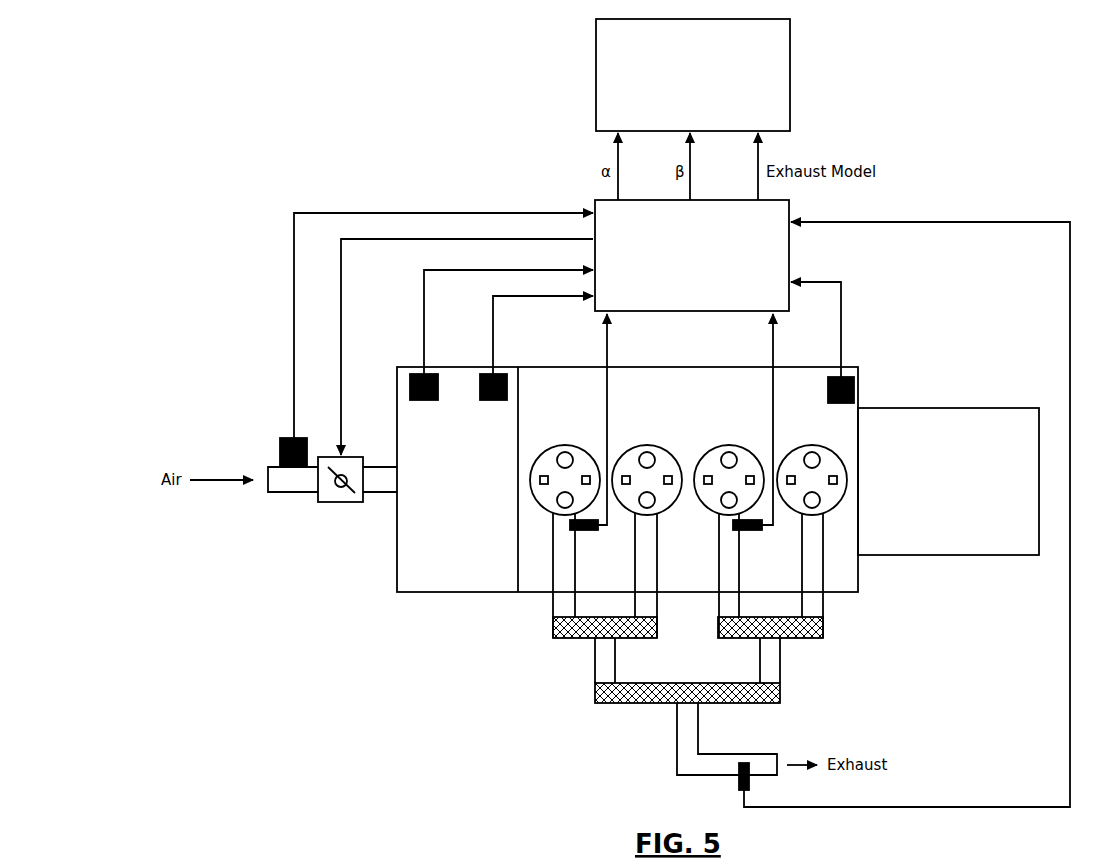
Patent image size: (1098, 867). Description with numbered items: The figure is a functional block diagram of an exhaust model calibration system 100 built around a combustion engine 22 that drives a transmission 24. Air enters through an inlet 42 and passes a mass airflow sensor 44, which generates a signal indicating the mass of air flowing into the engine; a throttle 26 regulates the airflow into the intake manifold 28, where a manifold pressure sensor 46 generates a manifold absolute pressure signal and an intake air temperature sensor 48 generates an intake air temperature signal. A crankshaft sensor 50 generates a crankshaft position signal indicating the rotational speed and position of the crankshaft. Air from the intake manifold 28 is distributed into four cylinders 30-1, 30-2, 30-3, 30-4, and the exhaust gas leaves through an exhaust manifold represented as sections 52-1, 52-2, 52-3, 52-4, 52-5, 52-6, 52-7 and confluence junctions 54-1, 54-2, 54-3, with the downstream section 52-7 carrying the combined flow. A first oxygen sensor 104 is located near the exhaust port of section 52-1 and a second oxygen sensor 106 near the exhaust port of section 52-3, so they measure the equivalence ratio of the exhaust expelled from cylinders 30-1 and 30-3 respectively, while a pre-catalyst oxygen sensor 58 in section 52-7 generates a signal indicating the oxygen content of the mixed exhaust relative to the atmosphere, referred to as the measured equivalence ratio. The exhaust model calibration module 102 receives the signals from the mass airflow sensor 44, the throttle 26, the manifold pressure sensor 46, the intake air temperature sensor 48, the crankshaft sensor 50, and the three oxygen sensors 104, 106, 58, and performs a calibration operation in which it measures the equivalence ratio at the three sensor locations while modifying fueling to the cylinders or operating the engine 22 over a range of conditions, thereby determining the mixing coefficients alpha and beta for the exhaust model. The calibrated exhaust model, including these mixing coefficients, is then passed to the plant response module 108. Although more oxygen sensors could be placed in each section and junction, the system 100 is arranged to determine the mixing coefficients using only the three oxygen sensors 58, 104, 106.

The exhaust model calibration system 100 is at (185, 40).
The plant response module 108 is at (596, 73).
The exhaust model calibration module 102 is at (690, 311).
The combustion engine 22 is at (553, 367).
The intake manifold 28 is at (458, 592).
The manifold pressure sensor 46 is at (424, 400).
The intake air temperature sensor 48 is at (493, 400).
The crankshaft sensor 50 is at (854, 391).
The transmission 24 is at (945, 408).
The cylinder 30-1 is at (559, 445).
The cylinder 30-2 is at (641, 445).
The cylinder 30-3 is at (723, 445).
The cylinder 30-4 is at (806, 445).
The exhaust manifold section 52-1 is at (553, 563).
The exhaust manifold section 52-2 is at (657, 531).
The exhaust manifold section 52-3 is at (719, 564).
The exhaust manifold section 52-4 is at (823, 540).
The exhaust manifold section 52-5 is at (595, 662).
The exhaust manifold section 52-6 is at (780, 663).
The exhaust manifold section 52-7 is at (677, 737).
The confluence junction 54-1 is at (553, 632).
The confluence junction 54-2 is at (823, 633).
The confluence junction 54-3 is at (780, 696).
The first oxygen sensor 104 is at (584, 530).
The second oxygen sensor 106 is at (749, 530).
The pre-catalyst oxygen sensor 58 is at (739, 786).
The inlet 42 is at (291, 492).
The throttle 26 is at (338, 502).
The mass airflow sensor 44 is at (280, 452).